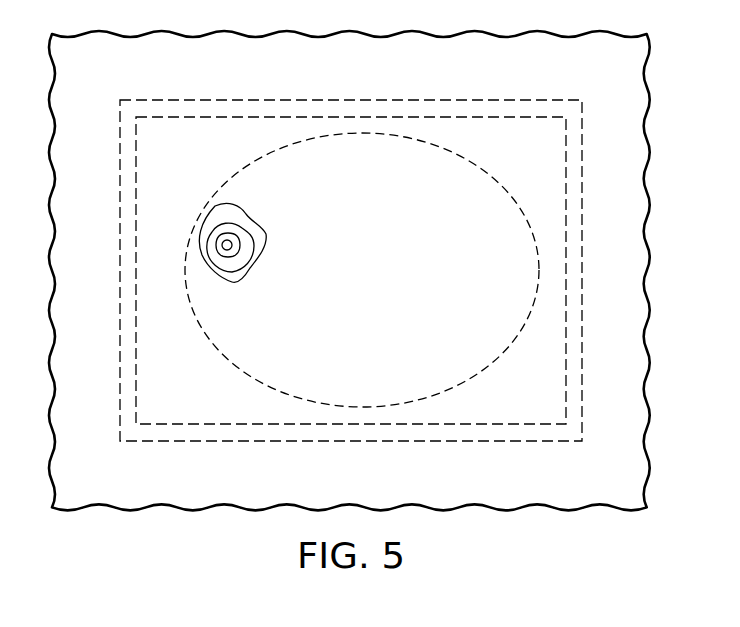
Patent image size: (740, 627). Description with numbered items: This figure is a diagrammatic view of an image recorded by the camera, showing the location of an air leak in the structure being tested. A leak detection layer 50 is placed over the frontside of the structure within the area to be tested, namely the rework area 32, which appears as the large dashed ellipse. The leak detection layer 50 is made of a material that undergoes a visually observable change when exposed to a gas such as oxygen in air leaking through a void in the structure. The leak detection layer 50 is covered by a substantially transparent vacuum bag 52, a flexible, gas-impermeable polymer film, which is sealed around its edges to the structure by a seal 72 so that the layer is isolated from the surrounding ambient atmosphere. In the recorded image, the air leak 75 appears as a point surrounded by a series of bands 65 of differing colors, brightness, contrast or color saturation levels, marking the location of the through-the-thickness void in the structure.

The vacuum bag 52 is at (363, 78).
The seal 72 is at (201, 100).
The leak detection layer 50 is at (510, 118).
The rework area 32 is at (490, 363).
The bands 65 is at (236, 230).
The air leak 75 is at (234, 248).